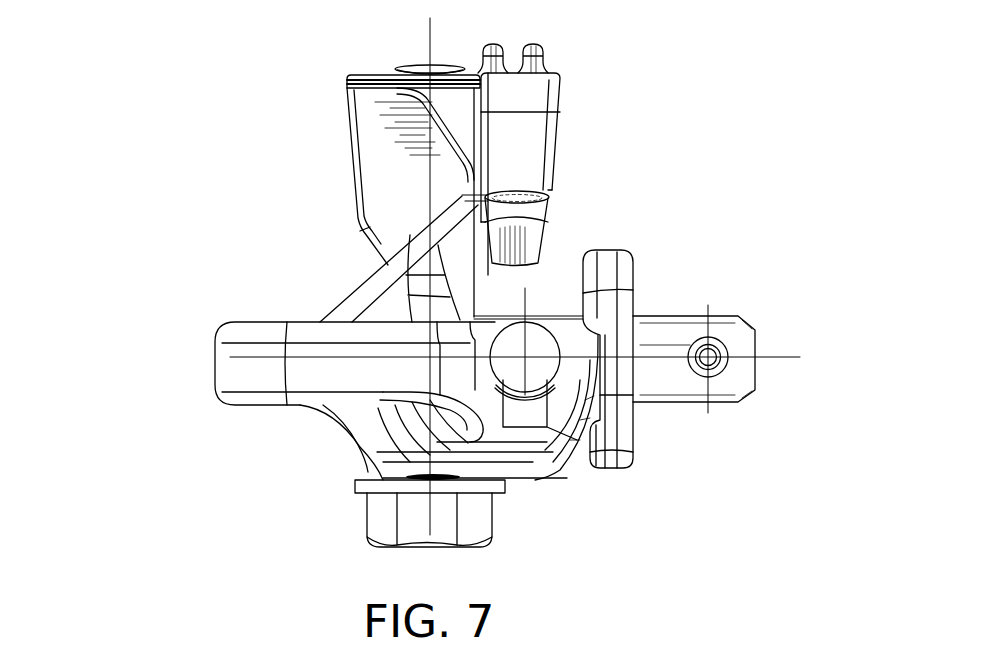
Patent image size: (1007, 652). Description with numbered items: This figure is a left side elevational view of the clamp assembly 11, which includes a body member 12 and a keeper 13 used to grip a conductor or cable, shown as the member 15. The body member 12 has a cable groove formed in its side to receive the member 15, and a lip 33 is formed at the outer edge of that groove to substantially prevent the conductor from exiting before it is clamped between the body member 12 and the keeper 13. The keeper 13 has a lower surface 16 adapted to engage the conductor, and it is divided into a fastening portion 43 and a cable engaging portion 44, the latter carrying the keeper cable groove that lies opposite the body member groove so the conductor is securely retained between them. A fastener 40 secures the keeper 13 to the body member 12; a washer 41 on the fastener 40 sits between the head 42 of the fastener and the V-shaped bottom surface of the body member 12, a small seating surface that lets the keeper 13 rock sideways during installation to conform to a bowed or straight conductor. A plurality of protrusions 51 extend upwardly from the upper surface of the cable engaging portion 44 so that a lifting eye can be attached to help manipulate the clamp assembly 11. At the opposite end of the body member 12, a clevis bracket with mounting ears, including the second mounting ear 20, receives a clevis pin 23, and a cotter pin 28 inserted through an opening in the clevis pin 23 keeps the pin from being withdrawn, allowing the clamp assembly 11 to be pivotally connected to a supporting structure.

The clamp assembly 11 is at (283, 248).
The body member 12 is at (238, 416).
The keeper 13 is at (572, 124).
The member 15 is at (533, 322).
The lower surface 16 is at (518, 237).
The second mounting ear 20 is at (634, 254).
The clevis pin 23 is at (670, 404).
The cotter pin 28 is at (720, 364).
The lip 33 is at (578, 318).
The fastener 40 is at (412, 64).
The washer 41 is at (353, 484).
The head 42 is at (492, 527).
The fastening portion 43 is at (347, 121).
The cable engaging portion 44 is at (558, 78).
The protrusions 51 is at (490, 46).